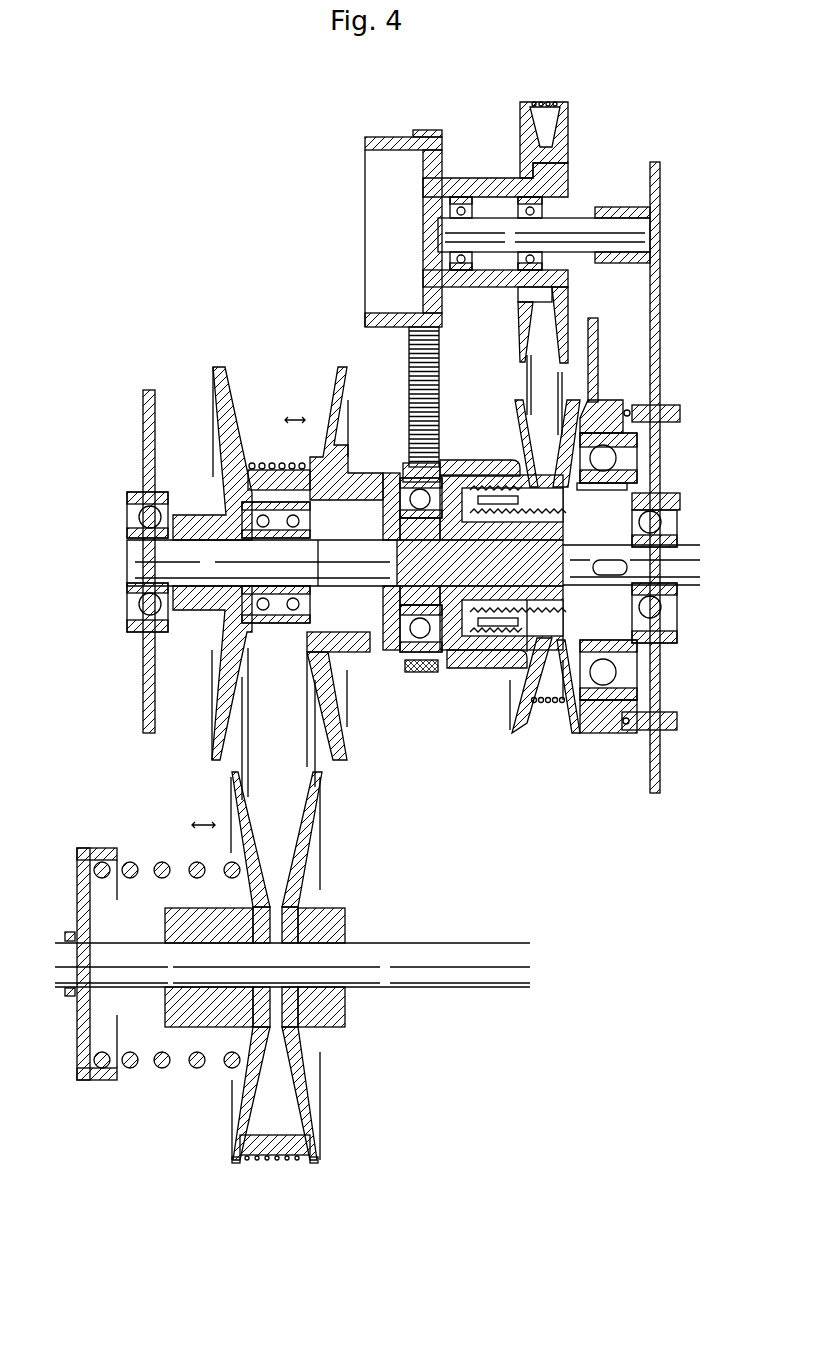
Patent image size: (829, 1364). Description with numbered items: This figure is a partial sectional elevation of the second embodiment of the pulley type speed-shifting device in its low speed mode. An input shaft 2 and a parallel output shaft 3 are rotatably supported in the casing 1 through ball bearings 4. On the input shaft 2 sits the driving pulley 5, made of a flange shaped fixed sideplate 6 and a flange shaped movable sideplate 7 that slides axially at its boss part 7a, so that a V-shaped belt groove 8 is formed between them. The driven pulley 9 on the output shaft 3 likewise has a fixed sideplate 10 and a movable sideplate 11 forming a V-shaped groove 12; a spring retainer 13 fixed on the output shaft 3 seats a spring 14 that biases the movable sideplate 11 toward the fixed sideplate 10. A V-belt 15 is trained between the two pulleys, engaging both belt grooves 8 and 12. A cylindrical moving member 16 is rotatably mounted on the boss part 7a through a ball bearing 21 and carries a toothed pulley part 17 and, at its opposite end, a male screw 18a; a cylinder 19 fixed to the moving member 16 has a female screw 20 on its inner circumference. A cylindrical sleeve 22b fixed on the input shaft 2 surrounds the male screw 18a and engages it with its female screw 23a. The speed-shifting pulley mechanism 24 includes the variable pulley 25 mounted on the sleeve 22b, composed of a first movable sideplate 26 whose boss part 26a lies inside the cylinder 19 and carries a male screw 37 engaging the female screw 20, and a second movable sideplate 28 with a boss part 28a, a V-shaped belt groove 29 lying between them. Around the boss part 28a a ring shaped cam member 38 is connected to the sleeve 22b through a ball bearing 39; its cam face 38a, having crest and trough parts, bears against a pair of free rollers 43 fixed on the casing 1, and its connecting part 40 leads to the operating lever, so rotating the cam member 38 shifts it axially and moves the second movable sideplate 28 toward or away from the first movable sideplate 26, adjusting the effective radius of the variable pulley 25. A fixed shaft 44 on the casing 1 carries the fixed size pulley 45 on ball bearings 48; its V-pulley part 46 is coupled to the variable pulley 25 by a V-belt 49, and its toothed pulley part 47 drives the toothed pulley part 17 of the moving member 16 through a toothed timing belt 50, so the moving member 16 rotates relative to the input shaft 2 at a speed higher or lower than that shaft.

The casing 1 is at (663, 180).
The input shaft 2 is at (127, 558).
The output shaft 3 is at (520, 945).
The ball bearings 4 is at (142, 602).
The driving pulley 5 is at (210, 363).
The fixed sideplate 6 is at (217, 365).
The movable sideplate 7 is at (345, 367).
The boss part 7a is at (299, 562).
The V-shaped belt groove 8 is at (334, 398).
The driven pulley 9 is at (324, 1085).
The fixed sideplate 10 is at (312, 1155).
The movable sideplate 11 is at (235, 1150).
The V-shaped groove 12 is at (300, 1158).
The spring retainer 13 is at (77, 1050).
The spring 14 is at (102, 1068).
The V-belt 15 is at (238, 765).
The moving member 16 is at (397, 670).
The toothed pulley part 17 is at (425, 672).
The male screw 18a is at (458, 470).
The cylinder 19 is at (440, 652).
The female screw 20 is at (497, 465).
The ball bearing 21 is at (400, 470).
The cylindrical sleeve 22b is at (680, 505).
The female screw 23a is at (548, 563).
The speed-shifting pulley mechanism 24 is at (561, 762).
The variable pulley 25 is at (513, 742).
The first movable sideplate 26 is at (520, 400).
The boss part 26a is at (458, 668).
The second movable sideplate 28 is at (580, 733).
The boss part 28a is at (622, 490).
The V-shaped belt groove 29 is at (538, 732).
The male screw 37 is at (505, 652).
The cam member 38 is at (600, 400).
The cam face 38a is at (652, 410).
The ball bearing 39 is at (640, 663).
The connecting part 40 is at (593, 318).
The free rollers 43 is at (682, 412).
The fixed shaft 44 is at (638, 226).
The fixed size pulley 45 is at (574, 135).
The V-pulley part 46 is at (566, 104).
The toothed pulley part 47 is at (388, 147).
The ball bearings 48 is at (546, 214).
The V-belt 49 is at (563, 385).
The toothed timing belt 50 is at (409, 345).